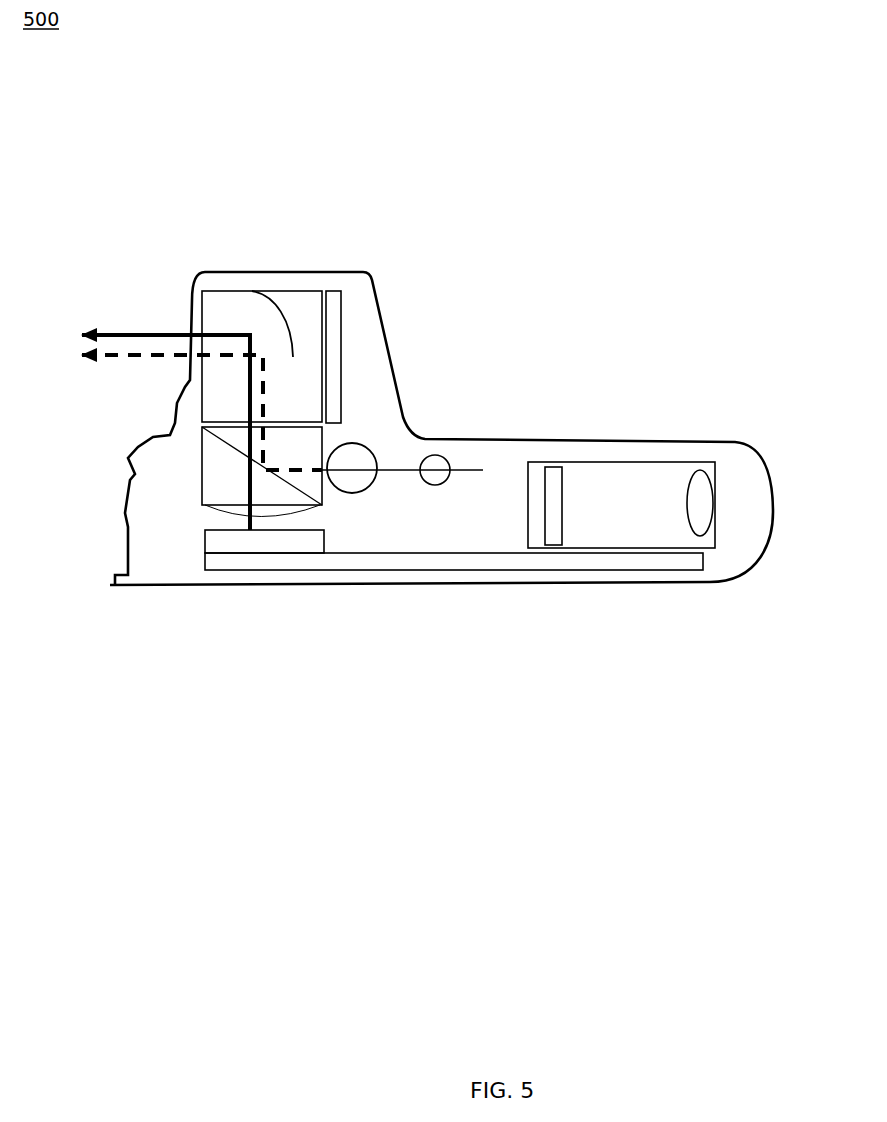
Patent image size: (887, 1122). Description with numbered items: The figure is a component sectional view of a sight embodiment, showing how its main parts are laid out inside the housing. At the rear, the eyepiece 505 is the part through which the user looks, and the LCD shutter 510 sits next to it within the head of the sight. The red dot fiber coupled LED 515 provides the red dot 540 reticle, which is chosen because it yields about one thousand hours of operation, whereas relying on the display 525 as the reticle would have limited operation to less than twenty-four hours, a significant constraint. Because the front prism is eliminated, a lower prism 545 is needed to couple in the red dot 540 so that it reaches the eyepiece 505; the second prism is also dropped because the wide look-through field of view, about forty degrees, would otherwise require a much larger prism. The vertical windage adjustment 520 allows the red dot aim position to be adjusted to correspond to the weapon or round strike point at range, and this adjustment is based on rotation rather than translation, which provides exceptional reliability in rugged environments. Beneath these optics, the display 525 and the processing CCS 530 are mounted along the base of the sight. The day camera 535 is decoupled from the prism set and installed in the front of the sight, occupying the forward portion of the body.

The eyepiece 505 is at (217, 283).
The LCD shutter 510 is at (335, 290).
The red dot fiber coupled LED 515 is at (441, 428).
The vertical windage adjustment 520 is at (436, 486).
The display 525 is at (205, 543).
The processing CCS 530 is at (240, 572).
The day camera 535 is at (602, 548).
The red dot 540 is at (292, 462).
The lower prism 545 is at (203, 470).